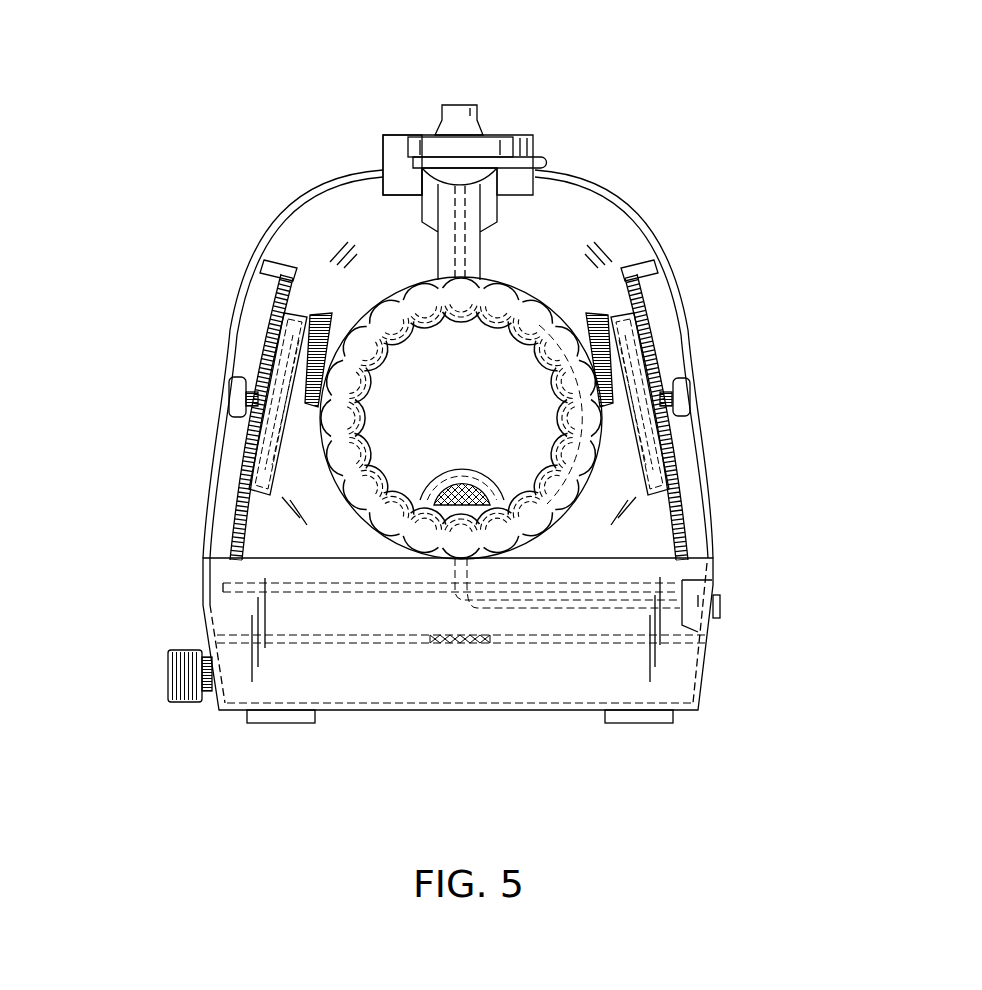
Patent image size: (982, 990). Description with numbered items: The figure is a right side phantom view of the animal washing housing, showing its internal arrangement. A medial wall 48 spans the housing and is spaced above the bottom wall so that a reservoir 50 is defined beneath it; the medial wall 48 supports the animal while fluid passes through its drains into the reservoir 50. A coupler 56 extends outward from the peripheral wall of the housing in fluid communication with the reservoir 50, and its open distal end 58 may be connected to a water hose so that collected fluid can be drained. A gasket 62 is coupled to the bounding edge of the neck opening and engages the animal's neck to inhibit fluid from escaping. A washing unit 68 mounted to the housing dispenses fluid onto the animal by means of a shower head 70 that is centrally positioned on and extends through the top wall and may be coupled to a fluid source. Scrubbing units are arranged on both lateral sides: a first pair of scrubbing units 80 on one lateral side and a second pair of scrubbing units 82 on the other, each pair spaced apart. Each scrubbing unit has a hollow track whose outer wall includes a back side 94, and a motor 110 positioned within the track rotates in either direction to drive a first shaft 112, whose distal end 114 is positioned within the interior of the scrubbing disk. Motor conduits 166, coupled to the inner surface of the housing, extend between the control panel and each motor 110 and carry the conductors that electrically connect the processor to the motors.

The medial wall 48 is at (245, 640).
The reservoir 50 is at (458, 675).
The coupler 56 is at (197, 703).
The distal end 58 is at (168, 684).
The gasket 62 is at (533, 315).
The washing unit 68 is at (490, 100).
The shower head 70 is at (387, 137).
The first pair of scrubbing units 80 is at (610, 303).
The second pair of scrubbing units 82 is at (312, 283).
The back side 94 is at (678, 333).
The motor 110 is at (673, 380).
The first shaft 112 is at (661, 406).
The distal end 114 is at (660, 400).
The motor conduits 166 is at (537, 587).